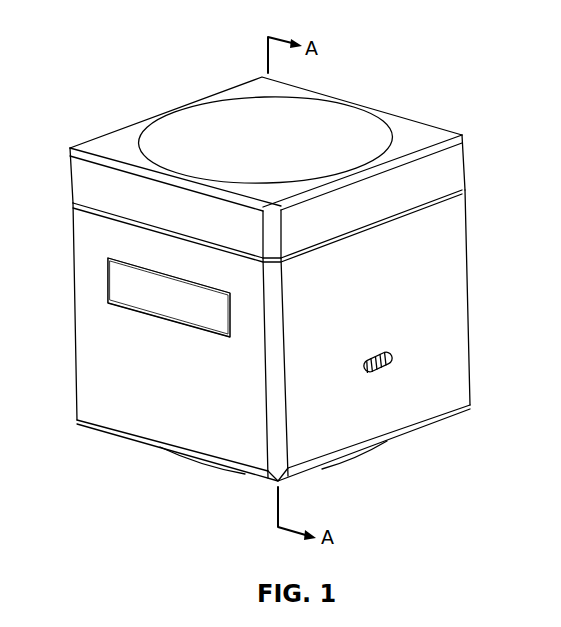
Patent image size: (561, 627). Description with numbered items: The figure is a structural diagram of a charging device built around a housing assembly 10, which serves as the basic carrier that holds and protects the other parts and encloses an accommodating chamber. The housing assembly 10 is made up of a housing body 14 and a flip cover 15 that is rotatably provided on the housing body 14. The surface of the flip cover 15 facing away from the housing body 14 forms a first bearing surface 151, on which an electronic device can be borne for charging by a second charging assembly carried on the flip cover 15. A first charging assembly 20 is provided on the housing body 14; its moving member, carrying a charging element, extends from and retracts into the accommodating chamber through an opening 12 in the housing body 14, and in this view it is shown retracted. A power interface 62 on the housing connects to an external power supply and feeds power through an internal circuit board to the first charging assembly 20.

The housing assembly 10 is at (289, 278).
The flip cover 15 is at (284, 166).
The first bearing surface 151 is at (405, 133).
The housing body 14 is at (270, 335).
The first charging assembly 20 is at (132, 292).
The opening 12 is at (155, 315).
The power interface 62 is at (388, 360).